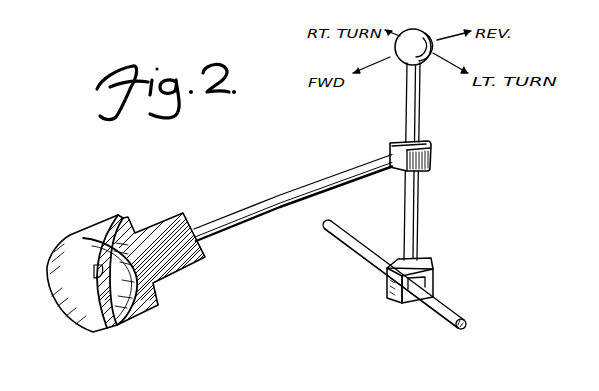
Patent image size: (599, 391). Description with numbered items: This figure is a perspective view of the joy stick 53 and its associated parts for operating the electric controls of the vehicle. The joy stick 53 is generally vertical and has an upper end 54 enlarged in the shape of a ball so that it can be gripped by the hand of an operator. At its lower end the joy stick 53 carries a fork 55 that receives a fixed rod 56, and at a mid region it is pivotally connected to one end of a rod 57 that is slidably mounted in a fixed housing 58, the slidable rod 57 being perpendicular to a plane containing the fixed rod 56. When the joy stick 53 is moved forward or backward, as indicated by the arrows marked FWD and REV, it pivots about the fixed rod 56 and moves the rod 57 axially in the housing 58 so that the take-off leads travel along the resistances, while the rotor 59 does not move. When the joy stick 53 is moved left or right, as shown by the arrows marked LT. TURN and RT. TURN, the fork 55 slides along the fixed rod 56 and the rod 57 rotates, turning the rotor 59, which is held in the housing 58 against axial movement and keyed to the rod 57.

The joy stick 53 is at (420, 124).
The upper end 54 is at (400, 64).
The fork 55 is at (423, 261).
The fixed rod 56 is at (452, 307).
The rod 57 is at (323, 181).
The fixed housing 58 is at (170, 210).
The rotor 59 is at (101, 232).